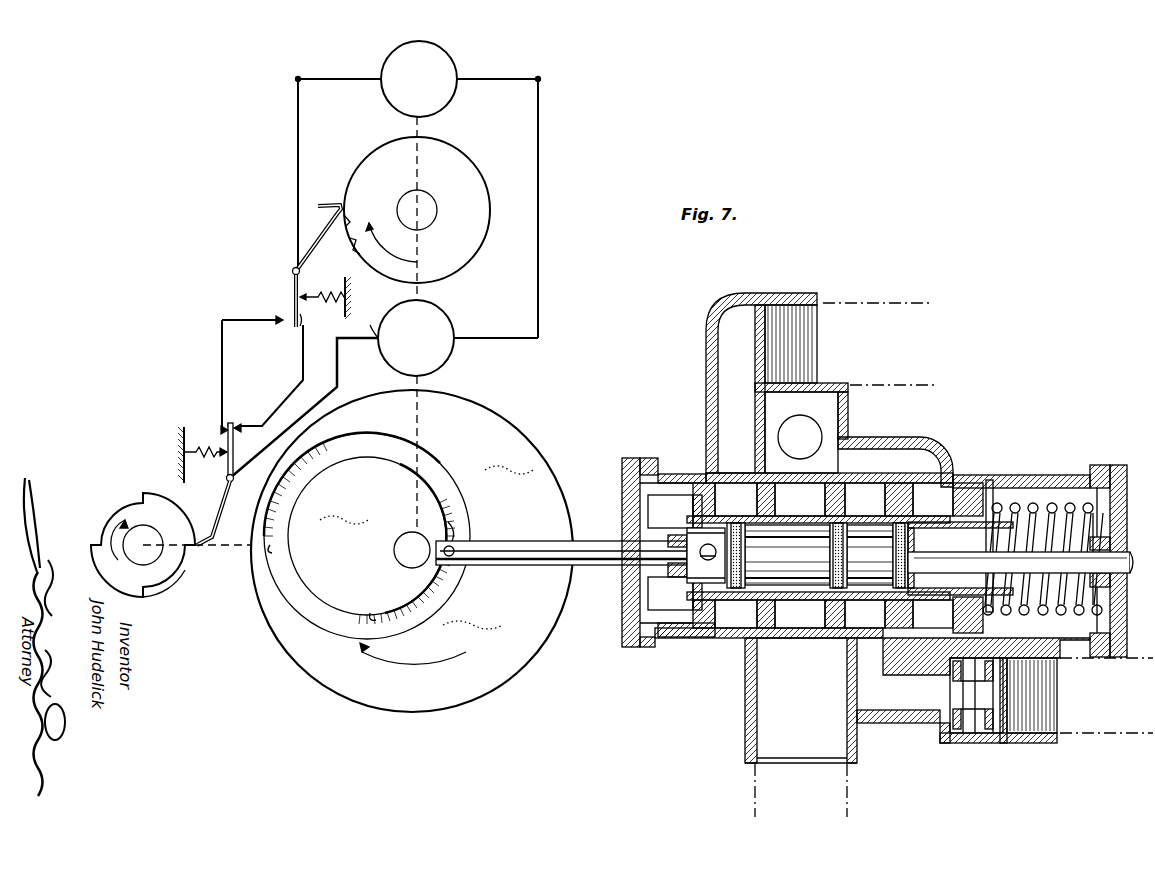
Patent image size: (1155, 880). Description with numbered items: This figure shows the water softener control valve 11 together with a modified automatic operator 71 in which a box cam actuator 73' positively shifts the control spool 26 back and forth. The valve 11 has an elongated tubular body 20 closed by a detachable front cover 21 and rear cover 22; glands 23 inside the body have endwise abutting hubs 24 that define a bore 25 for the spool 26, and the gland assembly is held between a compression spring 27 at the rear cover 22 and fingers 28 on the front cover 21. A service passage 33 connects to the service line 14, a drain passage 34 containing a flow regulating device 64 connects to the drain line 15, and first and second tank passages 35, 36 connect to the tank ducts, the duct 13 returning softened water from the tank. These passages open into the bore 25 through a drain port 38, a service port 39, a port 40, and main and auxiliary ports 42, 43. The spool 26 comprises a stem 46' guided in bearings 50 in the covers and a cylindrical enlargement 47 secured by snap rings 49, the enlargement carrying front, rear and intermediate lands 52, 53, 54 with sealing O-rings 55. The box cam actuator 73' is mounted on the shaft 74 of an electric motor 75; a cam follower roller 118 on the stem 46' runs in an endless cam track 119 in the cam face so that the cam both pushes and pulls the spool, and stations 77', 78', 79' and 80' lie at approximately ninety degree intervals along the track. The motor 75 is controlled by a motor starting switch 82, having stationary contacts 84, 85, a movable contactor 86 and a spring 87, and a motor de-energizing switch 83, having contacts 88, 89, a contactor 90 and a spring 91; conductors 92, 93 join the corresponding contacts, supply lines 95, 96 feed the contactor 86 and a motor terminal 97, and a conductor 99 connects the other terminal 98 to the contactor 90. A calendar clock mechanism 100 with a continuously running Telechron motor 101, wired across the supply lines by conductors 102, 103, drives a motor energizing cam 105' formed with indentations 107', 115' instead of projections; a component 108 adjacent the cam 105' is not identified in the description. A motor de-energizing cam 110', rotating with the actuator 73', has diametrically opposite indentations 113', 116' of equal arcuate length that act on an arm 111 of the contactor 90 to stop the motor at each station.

The control valve 11 is at (667, 701).
The duct 13 is at (850, 806).
The service line 14 is at (857, 302).
The drain line 15 is at (1080, 740).
The body 20 is at (1030, 492).
The front cover 21 is at (620, 617).
The rear cover 22 is at (1122, 480).
The glands 23 is at (705, 645).
The hubs 24 is at (823, 555).
The bore 25 is at (990, 482).
The control spool 26 is at (790, 555).
The compression spring 27 is at (1040, 502).
The fingers 28 is at (655, 486).
The service passage 33 is at (718, 344).
The drain passage 34 is at (878, 726).
The first tank passage 35 is at (835, 440).
The second tank passage 36 is at (775, 700).
The drain port 38 is at (865, 614).
The service port 39 is at (742, 475).
The port 40 is at (815, 630).
The main port 42 is at (912, 530).
The auxiliary port 43 is at (933, 499).
The stem 46' is at (561, 537).
The cylindrical enlargement 47 is at (800, 614).
The snap rings 49 is at (690, 540).
The bearings 50 is at (625, 586).
The front land 52 is at (736, 613).
The rear land 53 is at (918, 590).
The intermediate land 54 is at (800, 499).
The O-rings 55 is at (745, 548).
The flow regulating device 64 is at (960, 714).
The automatic operator 71 is at (266, 637).
The box cam actuator 73' is at (408, 587).
The shaft 74 is at (396, 550).
The electric motor 75 is at (440, 312).
The station 77' is at (436, 521).
The station 78' is at (359, 533).
The station 79' is at (299, 548).
The station 80' is at (382, 601).
The motor starting switch 82 is at (286, 295).
The motor de-energizing switch 83 is at (222, 425).
The stationary contact 84 is at (281, 310).
The stationary contact 85 is at (302, 319).
The movable contactor 86 is at (294, 270).
The spring 87 is at (342, 293).
The stationary contact 88 is at (224, 428).
The stationary contact 89 is at (245, 428).
The movable contactor 90 is at (246, 449).
The spring 91 is at (196, 452).
The conductor 92 is at (222, 350).
The conductor 93 is at (303, 350).
The supply line 95 is at (298, 133).
The supply line 96 is at (538, 130).
The terminal 97 is at (452, 348).
The terminal 98 is at (379, 322).
The conductor 99 is at (337, 366).
The calendar clock mechanism 100 is at (514, 185).
The Telechron type motor 101 is at (454, 60).
The conductor 102 is at (328, 78).
The conductor 103 is at (485, 79).
The motor energizing cam 105' is at (428, 201).
The indentation 107' is at (366, 204).
The cam follower lever 108 is at (330, 230).
The motor de-energizing cam 110' is at (171, 525).
The arm 111 is at (212, 513).
The indentation 113' is at (120, 524).
The indentation 115' is at (340, 251).
The indentation 116' is at (181, 589).
The cam follower roller 118 is at (458, 548).
The endless cam track 119 is at (432, 447).